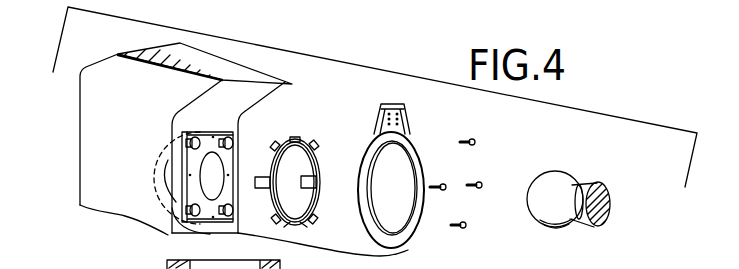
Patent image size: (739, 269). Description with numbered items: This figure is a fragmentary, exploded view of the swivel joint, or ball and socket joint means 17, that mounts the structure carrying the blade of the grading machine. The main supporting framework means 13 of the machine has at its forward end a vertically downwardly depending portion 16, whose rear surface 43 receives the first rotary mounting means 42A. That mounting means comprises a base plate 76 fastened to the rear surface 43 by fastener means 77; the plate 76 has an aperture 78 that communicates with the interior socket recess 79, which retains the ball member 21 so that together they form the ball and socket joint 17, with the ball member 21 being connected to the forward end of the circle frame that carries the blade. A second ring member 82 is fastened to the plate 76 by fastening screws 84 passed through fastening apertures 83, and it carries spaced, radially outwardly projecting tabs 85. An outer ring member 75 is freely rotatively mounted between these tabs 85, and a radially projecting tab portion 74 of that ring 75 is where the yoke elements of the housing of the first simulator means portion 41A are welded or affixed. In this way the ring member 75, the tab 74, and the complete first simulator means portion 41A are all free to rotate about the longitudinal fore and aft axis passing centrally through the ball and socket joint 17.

The main supporting framework means 13 is at (96, 78).
The depending portion 16 is at (80, 125).
The swivel connector means 17 is at (400, 72).
The ball member 21 is at (538, 209).
The first simulator means portion 41A is at (412, 115).
The first rotary mounting means 42A is at (287, 251).
The rear surface 43 is at (173, 207).
The tab portion 74 is at (381, 113).
The ring member 75 is at (402, 234).
The base plate 76 is at (188, 142).
The fastener means 77 is at (231, 134).
The aperture 78 is at (203, 180).
The socket recess 79 is at (170, 152).
The second ring member 82 is at (319, 166).
The fastening apertures 83 is at (298, 138).
The fastening screws 84 is at (476, 143).
The tabs 85 is at (318, 216).